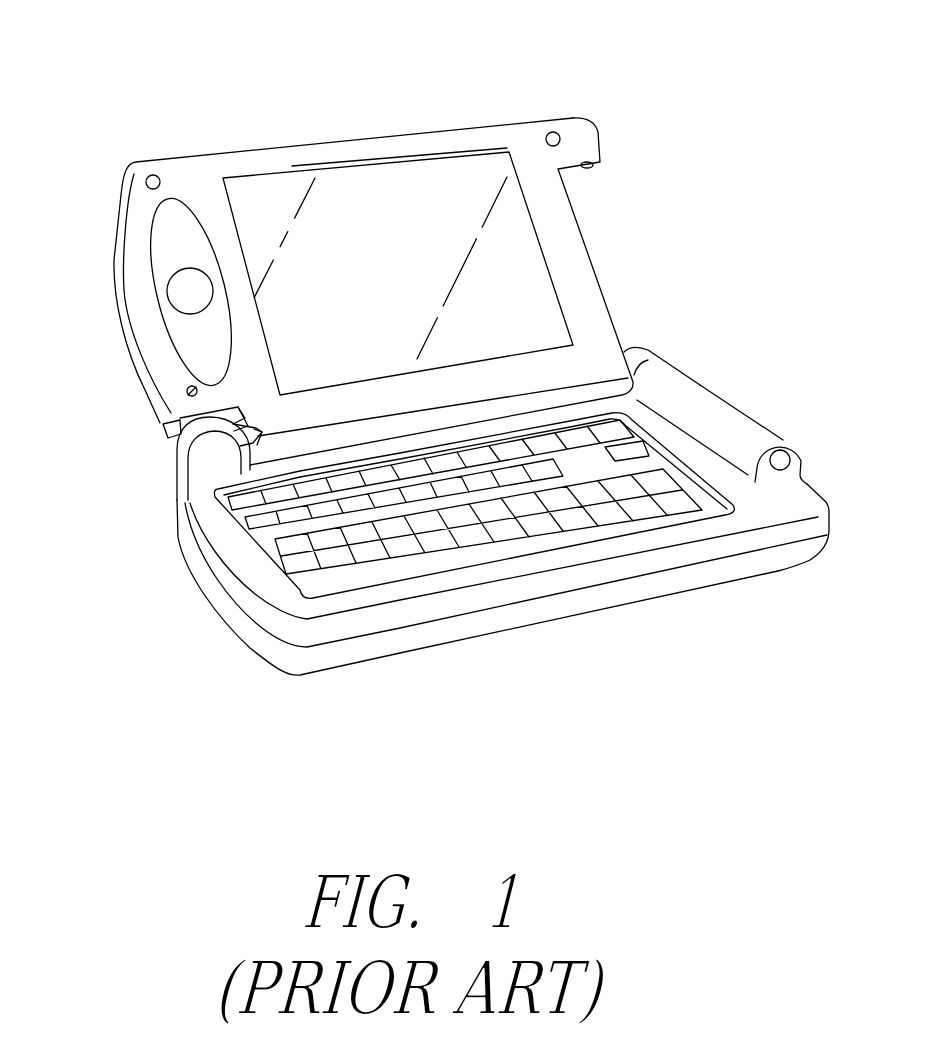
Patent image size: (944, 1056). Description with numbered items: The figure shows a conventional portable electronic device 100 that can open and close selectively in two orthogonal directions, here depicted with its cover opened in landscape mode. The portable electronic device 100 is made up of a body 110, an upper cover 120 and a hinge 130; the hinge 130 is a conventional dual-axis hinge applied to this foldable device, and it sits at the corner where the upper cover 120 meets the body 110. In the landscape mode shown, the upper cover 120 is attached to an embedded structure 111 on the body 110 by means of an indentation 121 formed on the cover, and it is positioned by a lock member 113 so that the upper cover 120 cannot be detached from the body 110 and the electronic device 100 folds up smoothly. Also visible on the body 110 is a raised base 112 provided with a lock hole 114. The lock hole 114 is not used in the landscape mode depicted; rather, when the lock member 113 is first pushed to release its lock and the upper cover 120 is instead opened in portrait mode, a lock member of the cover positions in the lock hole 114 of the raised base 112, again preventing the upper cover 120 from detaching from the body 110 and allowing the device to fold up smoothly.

The portable electronic device 100 is at (310, 127).
The body 110 is at (462, 588).
The embedded structure 111 is at (208, 457).
The raised base 112 is at (700, 413).
The lock member 113 is at (163, 428).
The lock hole 114 is at (781, 460).
The upper cover 120 is at (185, 183).
The indentation 121 is at (187, 389).
The hinge 130 is at (641, 347).